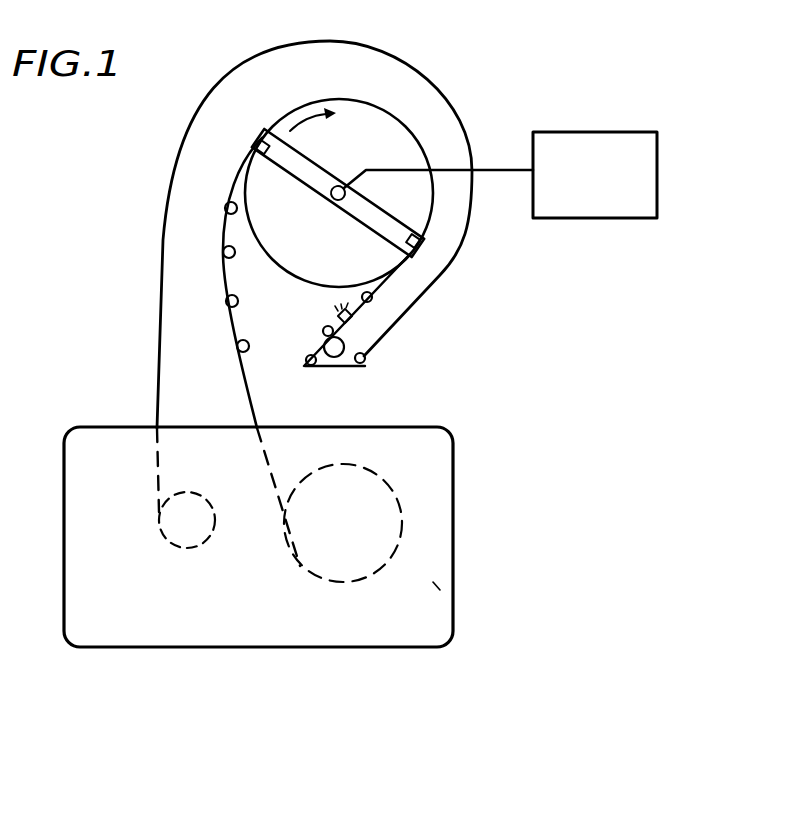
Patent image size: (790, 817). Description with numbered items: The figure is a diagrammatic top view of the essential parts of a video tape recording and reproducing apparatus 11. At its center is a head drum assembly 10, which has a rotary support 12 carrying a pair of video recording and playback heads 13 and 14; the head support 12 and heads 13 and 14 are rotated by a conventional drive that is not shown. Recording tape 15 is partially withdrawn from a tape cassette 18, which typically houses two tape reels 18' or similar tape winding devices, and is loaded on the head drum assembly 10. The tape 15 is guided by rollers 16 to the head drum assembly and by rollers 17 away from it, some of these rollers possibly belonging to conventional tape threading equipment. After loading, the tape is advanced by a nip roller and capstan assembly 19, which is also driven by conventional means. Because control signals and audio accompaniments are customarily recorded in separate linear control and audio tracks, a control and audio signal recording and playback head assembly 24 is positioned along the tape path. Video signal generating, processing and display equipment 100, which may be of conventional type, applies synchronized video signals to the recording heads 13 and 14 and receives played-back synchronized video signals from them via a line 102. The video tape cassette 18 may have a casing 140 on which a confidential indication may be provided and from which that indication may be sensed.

The head drum assembly 10 is at (328, 252).
The video tape recording and reproducing apparatus 11 is at (269, 313).
The rotary support 12 is at (353, 157).
The video recording and playback head 13 is at (430, 249).
The video recording and playback head 14 is at (258, 142).
The recording tape 15 is at (236, 345).
The rollers 16 is at (225, 209).
The rollers 17 is at (309, 368).
The tape cassette 18 is at (290, 537).
The tape reels 18' is at (252, 514).
The nip roller and capstan assembly 19 is at (336, 358).
The control and audio signal recording and playback head assembly 24 is at (338, 316).
The video signal generating, processing and display equipment 100 is at (598, 218).
The line 102 is at (516, 126).
The casing 140 is at (433, 582).